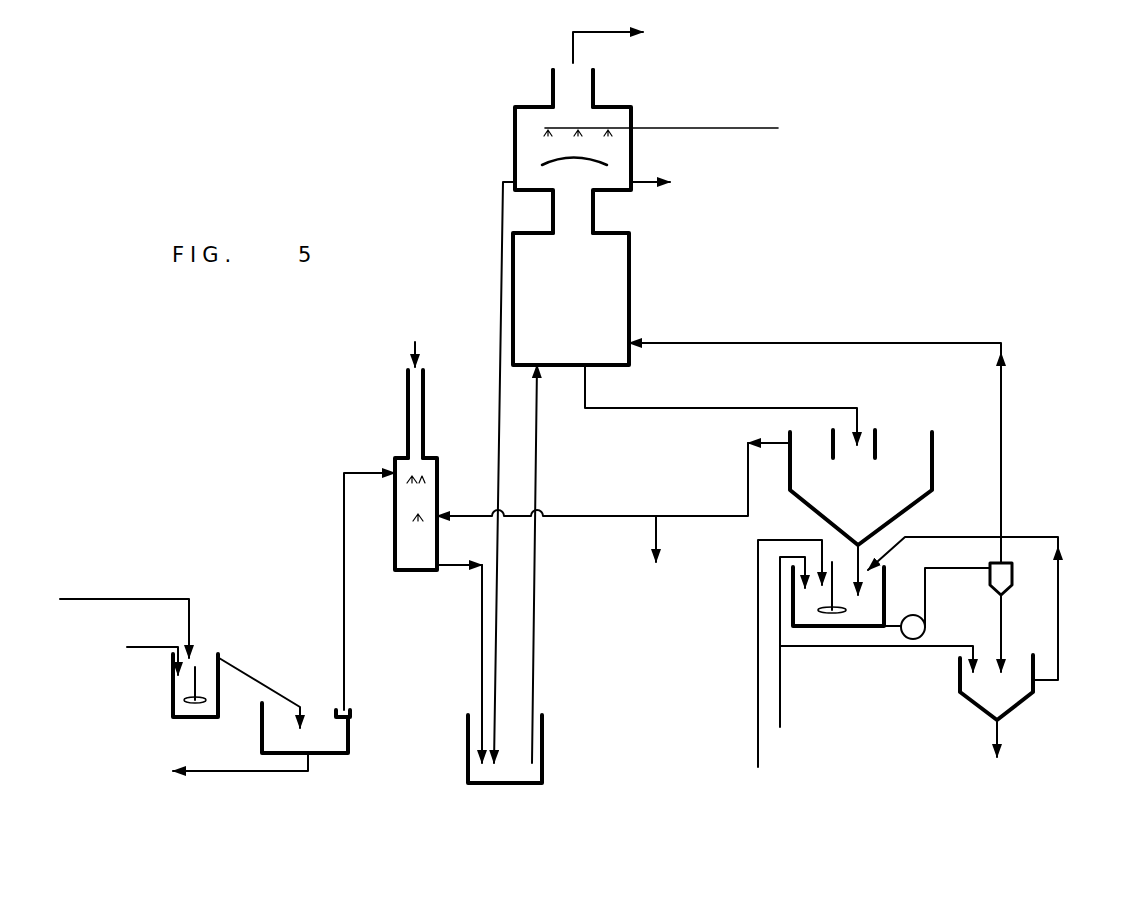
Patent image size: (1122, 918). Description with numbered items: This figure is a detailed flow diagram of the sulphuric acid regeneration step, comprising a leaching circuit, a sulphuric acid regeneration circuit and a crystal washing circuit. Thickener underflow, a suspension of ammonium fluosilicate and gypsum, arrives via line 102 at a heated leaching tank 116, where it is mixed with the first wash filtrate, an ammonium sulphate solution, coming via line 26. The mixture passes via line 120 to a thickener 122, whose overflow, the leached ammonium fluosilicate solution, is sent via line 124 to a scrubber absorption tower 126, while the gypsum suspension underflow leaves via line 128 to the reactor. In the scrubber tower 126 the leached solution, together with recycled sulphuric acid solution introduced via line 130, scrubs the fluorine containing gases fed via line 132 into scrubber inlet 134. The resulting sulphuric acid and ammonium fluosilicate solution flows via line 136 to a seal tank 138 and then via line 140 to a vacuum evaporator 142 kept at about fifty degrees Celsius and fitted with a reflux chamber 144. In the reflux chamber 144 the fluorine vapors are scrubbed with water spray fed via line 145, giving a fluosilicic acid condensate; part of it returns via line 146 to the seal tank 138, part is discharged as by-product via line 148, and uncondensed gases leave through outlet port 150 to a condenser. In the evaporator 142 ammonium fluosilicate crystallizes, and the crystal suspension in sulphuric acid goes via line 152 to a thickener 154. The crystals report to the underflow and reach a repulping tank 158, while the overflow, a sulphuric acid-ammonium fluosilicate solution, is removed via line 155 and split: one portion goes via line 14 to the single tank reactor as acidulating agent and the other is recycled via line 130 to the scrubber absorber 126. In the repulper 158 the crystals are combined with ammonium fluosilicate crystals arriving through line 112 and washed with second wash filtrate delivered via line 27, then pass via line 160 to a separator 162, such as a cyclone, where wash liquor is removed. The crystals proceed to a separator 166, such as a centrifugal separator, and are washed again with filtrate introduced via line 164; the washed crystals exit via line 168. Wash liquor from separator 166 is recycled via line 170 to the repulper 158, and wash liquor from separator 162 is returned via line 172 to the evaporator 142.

The line 14 is at (663, 535).
The line 26 is at (145, 650).
The line 27 is at (780, 708).
The line 102 is at (148, 599).
The line 112 is at (758, 623).
The heated leaching tank 116 is at (173, 693).
The line 120 is at (255, 681).
The thickener 122 is at (348, 740).
The line 124 is at (344, 608).
The scrubber absorption tower 126 is at (437, 495).
The line 128 is at (227, 772).
The line 130 is at (582, 516).
The line 132 is at (413, 350).
The scrubber inlet 134 is at (408, 392).
The line 136 is at (481, 652).
The seal tank 138 is at (542, 765).
The line 140 is at (532, 622).
The vacuum evaporator 142 is at (629, 265).
The reflux chamber 144 is at (515, 137).
The line 145 is at (730, 128).
The line 146 is at (503, 198).
The line 148 is at (638, 187).
The outlet port 150 is at (593, 83).
The line 152 is at (758, 408).
The thickener 154 is at (932, 450).
The line 155 is at (747, 455).
The repulping tank 158 is at (884, 583).
The line 160 is at (927, 595).
The separator 162 is at (1012, 578).
The line 164 is at (868, 646).
The separator 166 is at (1033, 700).
The line 168 is at (997, 733).
The line 170 is at (1058, 600).
The line 172 is at (835, 343).